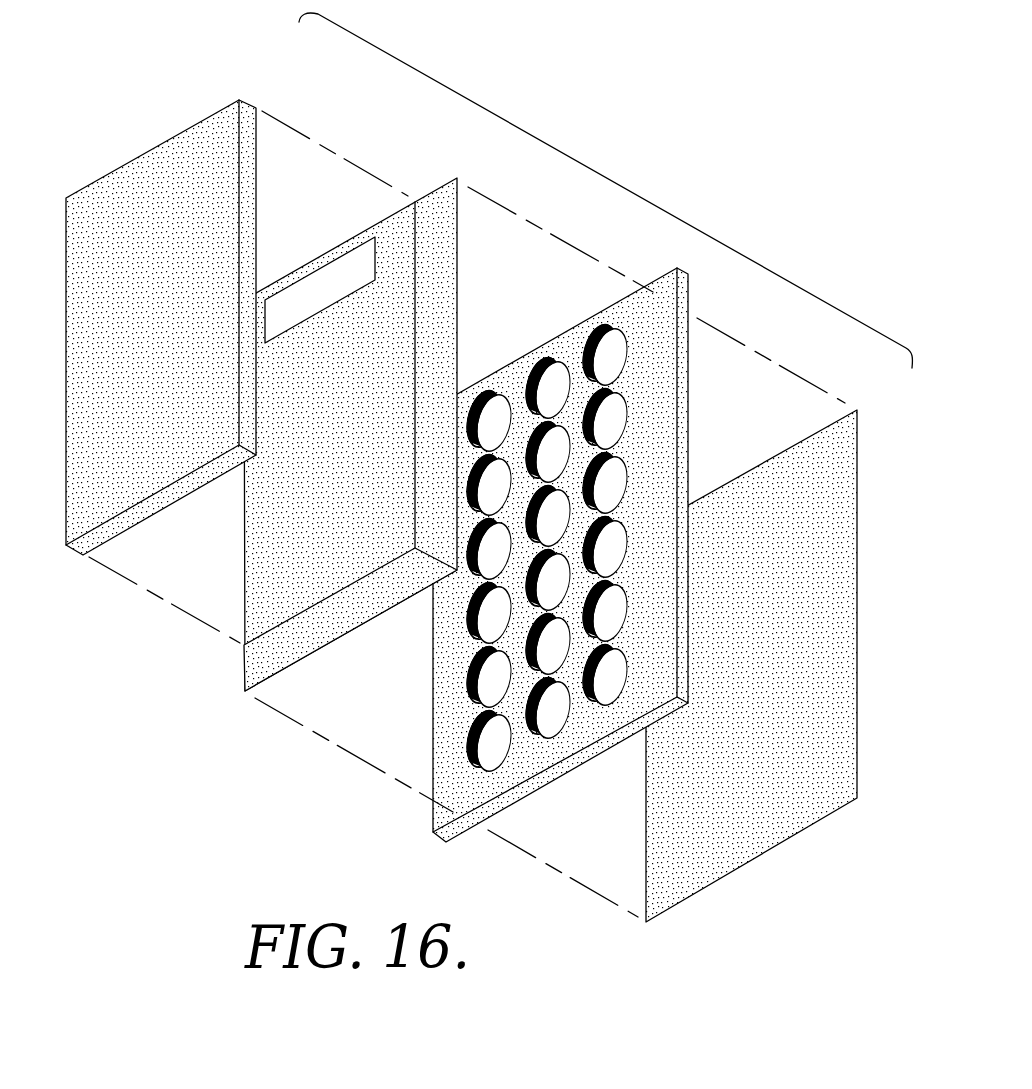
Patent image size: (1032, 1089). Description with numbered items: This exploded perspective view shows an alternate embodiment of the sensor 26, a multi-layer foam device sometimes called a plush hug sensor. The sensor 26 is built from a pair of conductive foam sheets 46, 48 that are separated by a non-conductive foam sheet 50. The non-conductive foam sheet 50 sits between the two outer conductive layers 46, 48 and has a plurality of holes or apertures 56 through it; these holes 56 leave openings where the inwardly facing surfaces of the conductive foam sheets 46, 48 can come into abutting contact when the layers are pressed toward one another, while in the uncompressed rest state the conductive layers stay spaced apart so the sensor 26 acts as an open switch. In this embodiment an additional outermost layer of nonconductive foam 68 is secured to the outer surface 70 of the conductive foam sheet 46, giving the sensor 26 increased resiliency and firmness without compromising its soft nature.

The sensor 26 is at (617, 183).
The conductive foam sheet 46 is at (325, 630).
The conductive foam sheet 48 is at (850, 523).
The non-conductive foam sheet 50 is at (682, 437).
The holes or apertures 56 is at (548, 366).
The outermost layer of nonconductive foam 68 is at (77, 477).
The outer surface 70 is at (250, 552).